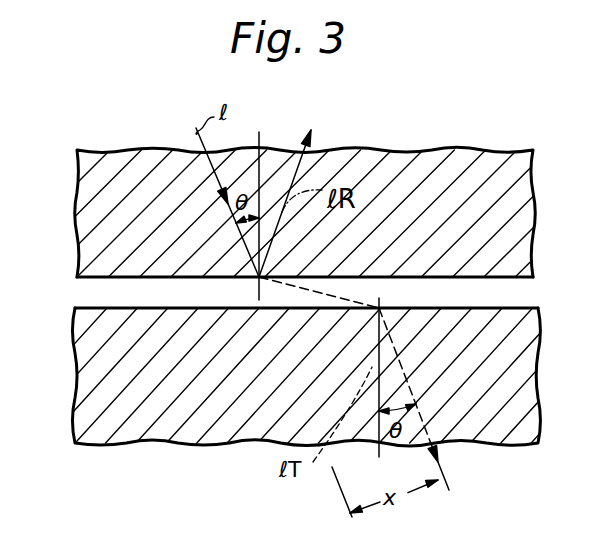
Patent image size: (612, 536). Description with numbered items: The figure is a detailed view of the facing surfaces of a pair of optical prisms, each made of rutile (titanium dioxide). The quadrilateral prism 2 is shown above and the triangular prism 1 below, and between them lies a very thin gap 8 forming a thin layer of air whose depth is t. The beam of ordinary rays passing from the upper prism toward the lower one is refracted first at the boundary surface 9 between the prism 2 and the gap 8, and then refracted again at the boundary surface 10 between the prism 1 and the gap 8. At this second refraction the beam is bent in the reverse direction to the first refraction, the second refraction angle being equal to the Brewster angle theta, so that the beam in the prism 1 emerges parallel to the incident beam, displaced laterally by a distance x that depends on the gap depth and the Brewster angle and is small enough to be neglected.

The optical prism 1 is at (527, 363).
The optical prism 2 is at (523, 191).
The gap 8 is at (180, 293).
The boundary surface 9 is at (400, 278).
The boundary surface 10 is at (487, 306).